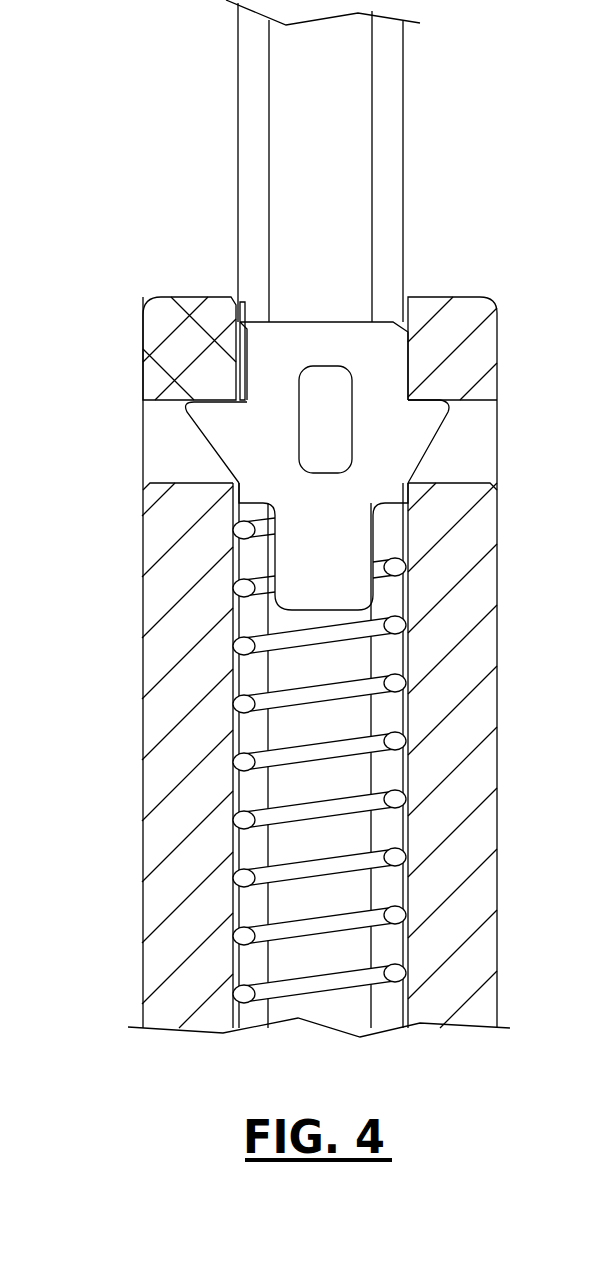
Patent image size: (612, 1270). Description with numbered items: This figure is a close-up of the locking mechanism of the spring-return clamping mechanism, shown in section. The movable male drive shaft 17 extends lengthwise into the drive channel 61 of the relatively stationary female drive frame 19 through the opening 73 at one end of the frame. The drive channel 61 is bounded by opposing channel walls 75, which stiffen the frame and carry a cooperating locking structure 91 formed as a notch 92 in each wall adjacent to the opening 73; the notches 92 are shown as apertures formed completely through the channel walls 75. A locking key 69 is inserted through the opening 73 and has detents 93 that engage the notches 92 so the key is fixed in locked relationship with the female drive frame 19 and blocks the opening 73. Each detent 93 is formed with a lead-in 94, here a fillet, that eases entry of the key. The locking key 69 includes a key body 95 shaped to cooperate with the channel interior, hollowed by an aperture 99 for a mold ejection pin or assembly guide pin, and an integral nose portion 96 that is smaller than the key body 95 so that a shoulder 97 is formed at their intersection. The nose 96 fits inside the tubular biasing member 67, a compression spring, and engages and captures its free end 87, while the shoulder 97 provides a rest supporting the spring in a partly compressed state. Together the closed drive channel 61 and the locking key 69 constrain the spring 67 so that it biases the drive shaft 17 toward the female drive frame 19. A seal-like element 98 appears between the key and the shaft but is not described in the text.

The male drive shaft 17 is at (398, 115).
The opening 73 is at (413, 285).
The locking key 69 is at (258, 386).
The seal 98 is at (244, 300).
The cooperating locking structure 91 is at (108, 394).
The notch 92 is at (140, 436).
The key body 95 is at (392, 364).
The aperture 99 is at (339, 432).
The detent 93 is at (200, 413).
The lead-in 94 is at (213, 457).
The nose portion 96 is at (340, 580).
The biasing member 67 is at (375, 752).
The shoulder 97 is at (235, 522).
The free end 87 is at (241, 587).
The female drive frame 19 is at (148, 740).
The channel wall 75 is at (157, 920).
The drive channel 61 is at (326, 1003).